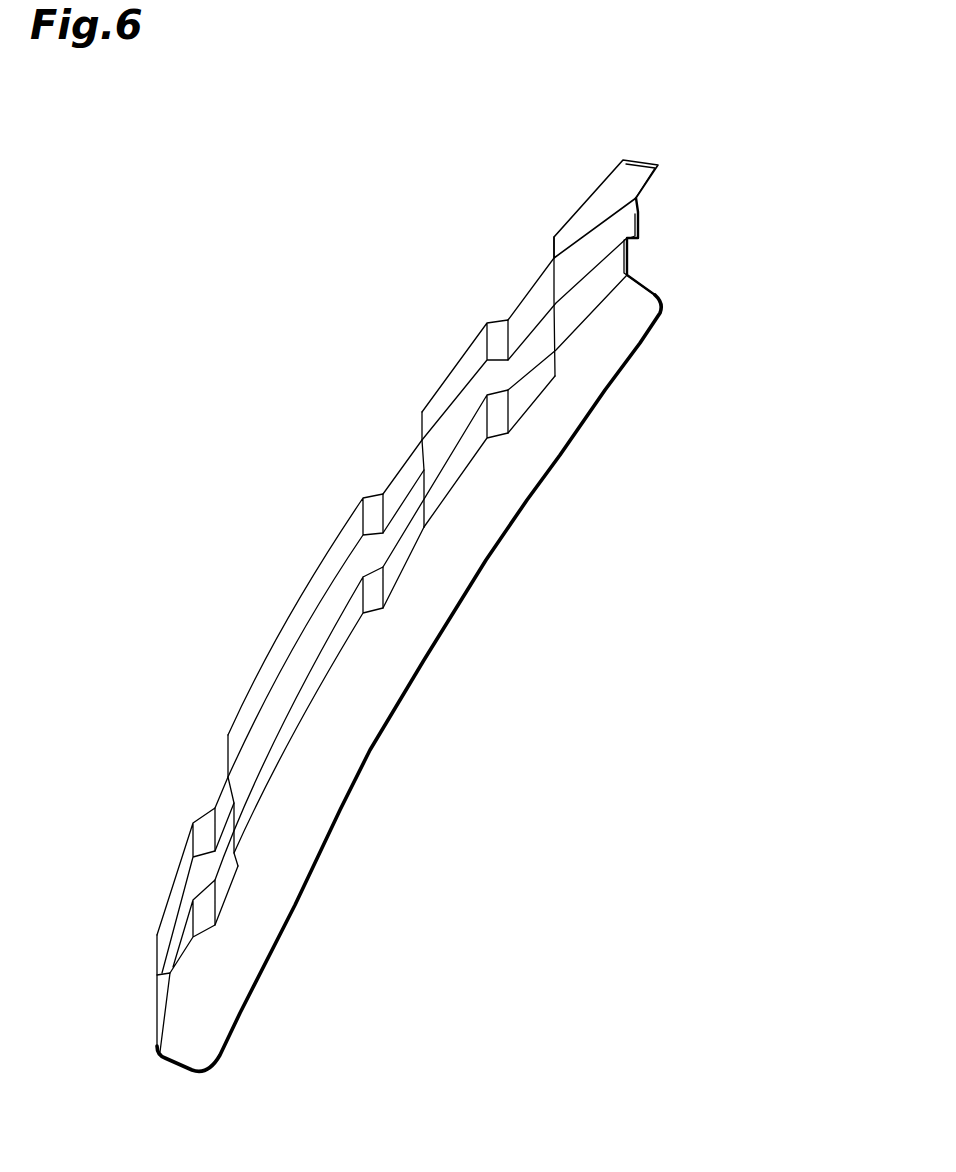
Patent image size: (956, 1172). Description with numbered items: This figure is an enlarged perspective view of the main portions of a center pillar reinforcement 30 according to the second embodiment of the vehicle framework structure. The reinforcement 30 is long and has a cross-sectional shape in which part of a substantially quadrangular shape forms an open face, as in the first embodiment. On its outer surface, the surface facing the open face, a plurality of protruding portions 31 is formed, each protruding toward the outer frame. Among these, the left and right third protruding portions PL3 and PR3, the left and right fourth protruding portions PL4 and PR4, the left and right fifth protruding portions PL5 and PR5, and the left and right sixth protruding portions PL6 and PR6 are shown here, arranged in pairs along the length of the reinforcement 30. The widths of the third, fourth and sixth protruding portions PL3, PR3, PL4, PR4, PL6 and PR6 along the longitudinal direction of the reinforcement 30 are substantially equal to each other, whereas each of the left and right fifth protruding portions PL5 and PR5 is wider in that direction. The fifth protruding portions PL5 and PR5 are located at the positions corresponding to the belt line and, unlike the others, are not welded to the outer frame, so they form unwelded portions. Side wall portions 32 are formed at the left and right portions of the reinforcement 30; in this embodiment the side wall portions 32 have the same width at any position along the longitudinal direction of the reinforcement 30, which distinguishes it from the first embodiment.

The reinforcement 30 is at (376, 428).
The protruding portions 31 is at (503, 298).
The side wall portions 32 is at (400, 662).
The left third protruding portion PL3 is at (590, 212).
The left fourth protruding portion PL4 is at (453, 383).
The left fifth protruding portion PL5 is at (282, 652).
The left sixth protruding portion PL6 is at (167, 925).
The right third protruding portion PR3 is at (591, 293).
The right fourth protruding portion PR4 is at (465, 452).
The right fifth protruding portion PR5 is at (315, 680).
The right sixth protruding portion PR6 is at (180, 970).